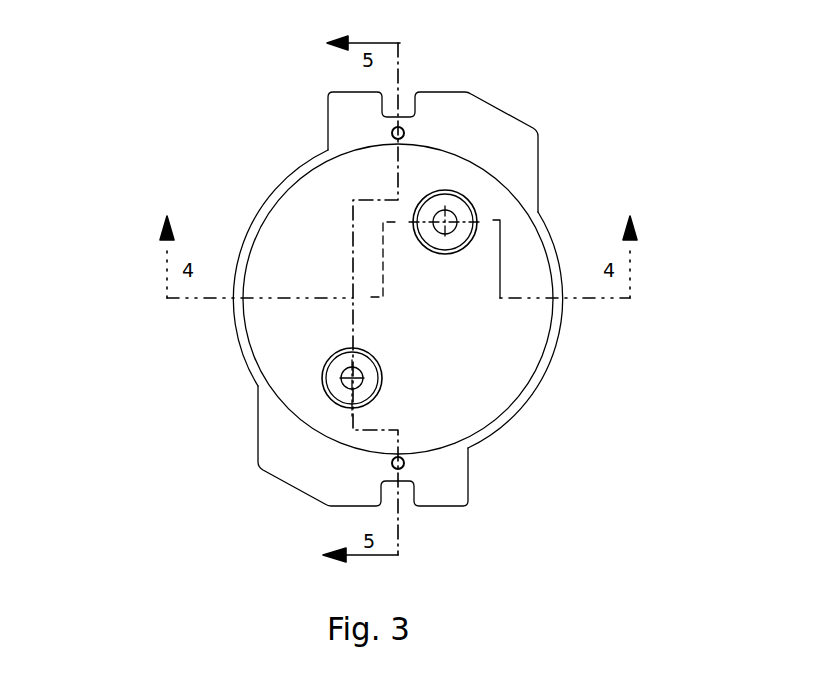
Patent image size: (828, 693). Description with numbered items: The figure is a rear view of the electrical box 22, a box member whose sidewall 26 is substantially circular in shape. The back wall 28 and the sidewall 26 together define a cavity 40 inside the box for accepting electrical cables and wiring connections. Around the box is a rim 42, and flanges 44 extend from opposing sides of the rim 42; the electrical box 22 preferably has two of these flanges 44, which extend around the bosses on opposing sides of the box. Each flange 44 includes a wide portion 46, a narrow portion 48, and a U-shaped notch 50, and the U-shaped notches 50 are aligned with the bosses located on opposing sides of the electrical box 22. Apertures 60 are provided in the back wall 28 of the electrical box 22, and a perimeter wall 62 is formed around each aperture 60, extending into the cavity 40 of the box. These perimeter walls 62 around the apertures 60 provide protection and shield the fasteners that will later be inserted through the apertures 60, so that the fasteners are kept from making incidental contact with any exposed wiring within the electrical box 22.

The electrical box 22 is at (142, 127).
The sidewall 26 is at (543, 230).
The back wall 28 is at (434, 267).
The cavity 40 is at (497, 343).
The rim 42 is at (250, 363).
The flanges 44 is at (503, 105).
The wide portion 46 is at (398, 301).
The narrow portion 48 is at (397, 303).
The U-shaped notch 50 is at (403, 104).
The apertures 60 is at (364, 380).
The perimeter wall 62 is at (368, 400).